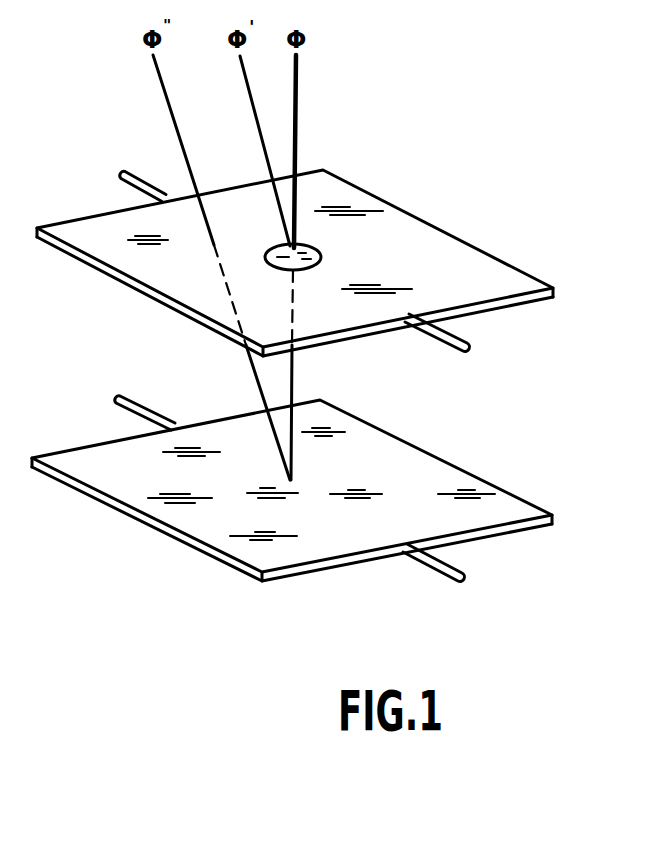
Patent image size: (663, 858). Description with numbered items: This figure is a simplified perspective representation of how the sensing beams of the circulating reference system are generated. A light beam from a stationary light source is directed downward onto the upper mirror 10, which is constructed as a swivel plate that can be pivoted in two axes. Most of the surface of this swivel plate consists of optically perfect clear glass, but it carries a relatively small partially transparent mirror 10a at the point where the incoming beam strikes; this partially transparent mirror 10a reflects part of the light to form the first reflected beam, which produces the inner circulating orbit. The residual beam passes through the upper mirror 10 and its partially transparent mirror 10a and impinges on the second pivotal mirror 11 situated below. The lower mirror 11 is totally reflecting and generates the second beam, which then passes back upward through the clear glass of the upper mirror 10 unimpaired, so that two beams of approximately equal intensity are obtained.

The upper mirror 10 is at (155, 268).
The partially transparent mirror 10a is at (300, 245).
The lower mirror 11 is at (123, 485).